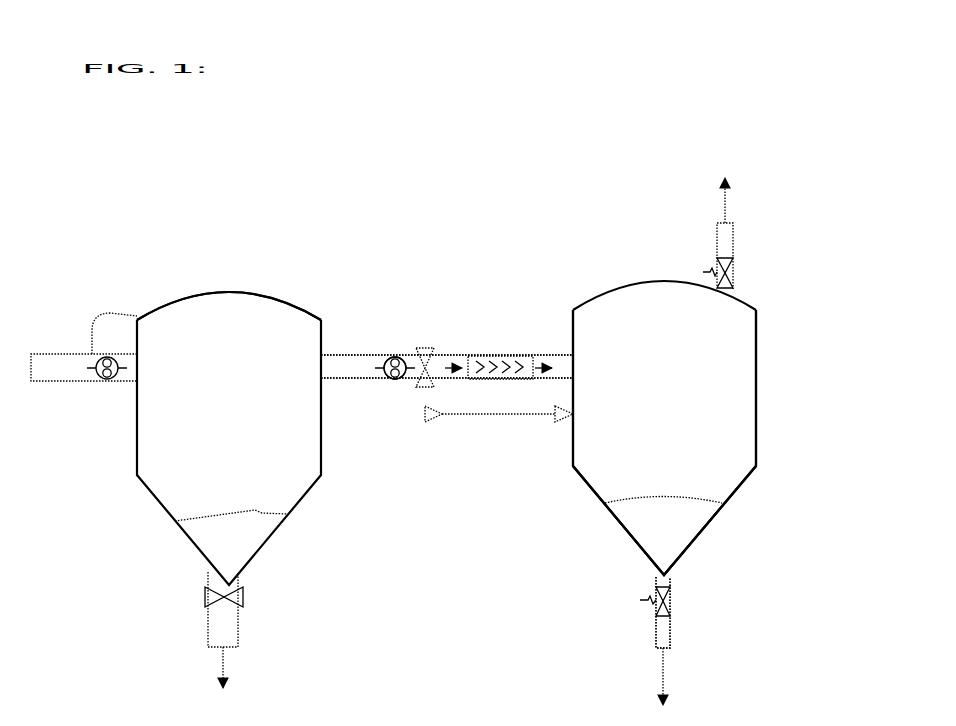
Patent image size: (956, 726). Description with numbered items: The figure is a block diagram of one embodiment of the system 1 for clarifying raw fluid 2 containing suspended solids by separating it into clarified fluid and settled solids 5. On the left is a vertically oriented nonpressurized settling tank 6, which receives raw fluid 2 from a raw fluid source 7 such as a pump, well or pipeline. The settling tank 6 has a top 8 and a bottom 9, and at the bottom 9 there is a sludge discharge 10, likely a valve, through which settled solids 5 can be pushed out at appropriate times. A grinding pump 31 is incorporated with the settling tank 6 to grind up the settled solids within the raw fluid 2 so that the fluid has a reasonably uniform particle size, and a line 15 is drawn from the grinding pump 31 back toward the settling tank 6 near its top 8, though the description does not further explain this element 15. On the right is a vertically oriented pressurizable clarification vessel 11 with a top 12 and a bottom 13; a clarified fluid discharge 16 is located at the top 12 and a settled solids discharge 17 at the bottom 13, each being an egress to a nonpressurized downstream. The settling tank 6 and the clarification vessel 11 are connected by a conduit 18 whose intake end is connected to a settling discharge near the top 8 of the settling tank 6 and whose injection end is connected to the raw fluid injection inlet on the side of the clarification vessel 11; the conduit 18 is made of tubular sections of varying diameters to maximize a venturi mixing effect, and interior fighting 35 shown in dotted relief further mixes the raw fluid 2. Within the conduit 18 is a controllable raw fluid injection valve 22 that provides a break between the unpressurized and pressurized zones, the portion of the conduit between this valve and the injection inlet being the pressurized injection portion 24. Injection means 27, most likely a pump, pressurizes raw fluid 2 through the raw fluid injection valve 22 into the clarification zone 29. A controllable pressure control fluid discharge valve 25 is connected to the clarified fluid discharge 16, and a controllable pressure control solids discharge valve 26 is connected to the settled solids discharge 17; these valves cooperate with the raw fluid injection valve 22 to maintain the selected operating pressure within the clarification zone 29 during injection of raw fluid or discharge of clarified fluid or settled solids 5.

The system 1 is at (240, 212).
The raw fluid 2 is at (229, 452).
The settled solids 5 is at (664, 520).
The settling tank 6 is at (185, 292).
The raw fluid source 7 is at (73, 352).
The top 8 is at (229, 295).
The bottom 9 is at (208, 623).
The sludge discharge 10 is at (236, 596).
The clarification vessel 11 is at (772, 518).
The top 12 is at (664, 285).
The bottom 13 is at (643, 626).
The bypass line 15 is at (114, 327).
The clarified fluid discharge 16 is at (740, 293).
The settled solids discharge 17 is at (676, 578).
The conduit 18 is at (388, 385).
The raw fluid injection valve 22 is at (424, 379).
The injection portion 24 is at (499, 414).
The fluid discharge valve 25 is at (730, 273).
The solids discharge valve 26 is at (667, 601).
The injection means 27 is at (395, 358).
The clarification zone 29 is at (664, 442).
The grinding pump 31 is at (98, 386).
The interior fighting 35 is at (487, 352).